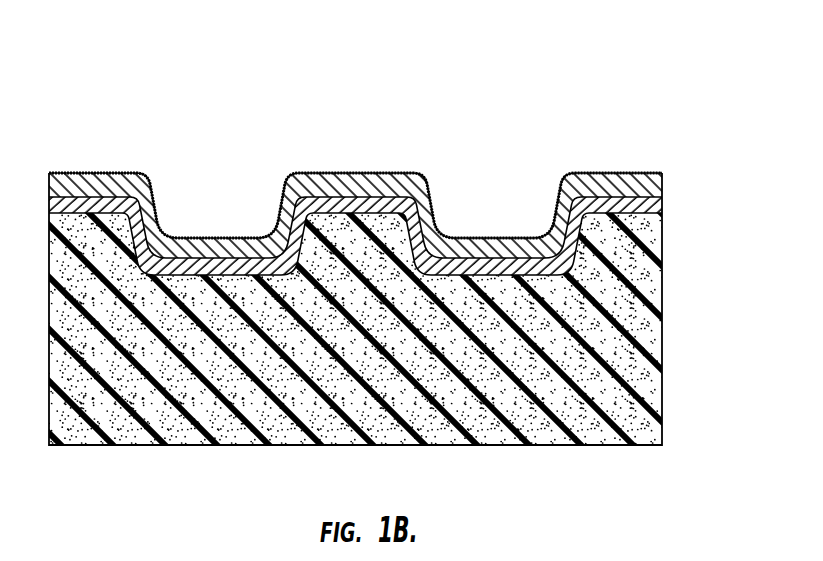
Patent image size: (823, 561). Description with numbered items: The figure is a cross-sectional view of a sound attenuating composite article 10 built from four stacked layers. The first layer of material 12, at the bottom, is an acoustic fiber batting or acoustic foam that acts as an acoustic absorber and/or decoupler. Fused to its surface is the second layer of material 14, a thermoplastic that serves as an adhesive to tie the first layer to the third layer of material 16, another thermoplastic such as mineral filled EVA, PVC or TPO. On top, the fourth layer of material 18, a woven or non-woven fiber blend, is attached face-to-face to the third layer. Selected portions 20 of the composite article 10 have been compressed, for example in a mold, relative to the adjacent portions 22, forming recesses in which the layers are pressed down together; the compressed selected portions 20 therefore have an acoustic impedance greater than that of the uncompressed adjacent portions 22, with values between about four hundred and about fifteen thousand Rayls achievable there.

The sound attenuating composite article 10 is at (411, 280).
The first layer of material 12 is at (672, 269).
The second layer of material 14 is at (673, 211).
The third layer of material 16 is at (672, 184).
The fourth layer of material 18 is at (667, 165).
The selected portions 20 is at (246, 196).
The adjacent portions 22 is at (90, 173).